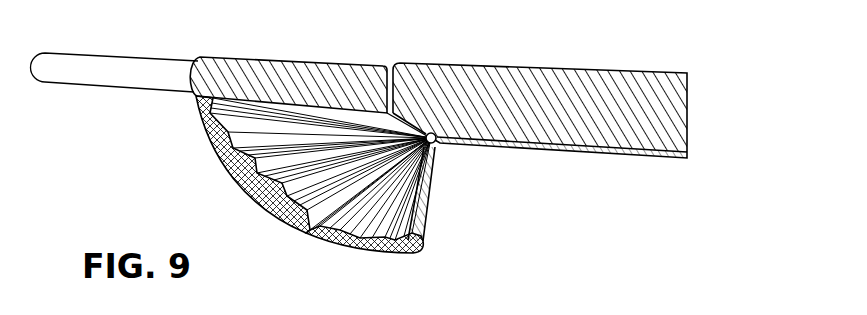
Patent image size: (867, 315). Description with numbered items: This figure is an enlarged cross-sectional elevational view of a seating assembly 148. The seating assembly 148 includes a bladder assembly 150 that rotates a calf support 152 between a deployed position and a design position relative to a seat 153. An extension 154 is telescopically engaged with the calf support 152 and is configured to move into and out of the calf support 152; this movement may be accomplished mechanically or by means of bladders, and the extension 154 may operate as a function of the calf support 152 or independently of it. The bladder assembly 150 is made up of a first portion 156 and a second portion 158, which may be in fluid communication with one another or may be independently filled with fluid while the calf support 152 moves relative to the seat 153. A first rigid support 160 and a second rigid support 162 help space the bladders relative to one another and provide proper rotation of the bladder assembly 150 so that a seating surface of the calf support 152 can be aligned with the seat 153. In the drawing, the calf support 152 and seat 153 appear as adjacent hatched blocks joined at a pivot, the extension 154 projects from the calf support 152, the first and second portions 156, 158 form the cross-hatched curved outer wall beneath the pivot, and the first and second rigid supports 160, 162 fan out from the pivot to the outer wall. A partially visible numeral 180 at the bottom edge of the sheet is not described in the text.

The seating assembly 148 is at (134, 145).
The bladder assembly 150 is at (477, 185).
The calf support 152 is at (290, 63).
The seat 153 is at (588, 87).
The extension 154 is at (137, 63).
The first portion 156 is at (266, 162).
The second portion 158 is at (363, 225).
The first rigid support 160 is at (338, 212).
The second rigid support 162 is at (422, 208).
The reference element 180 is at (632, 311).